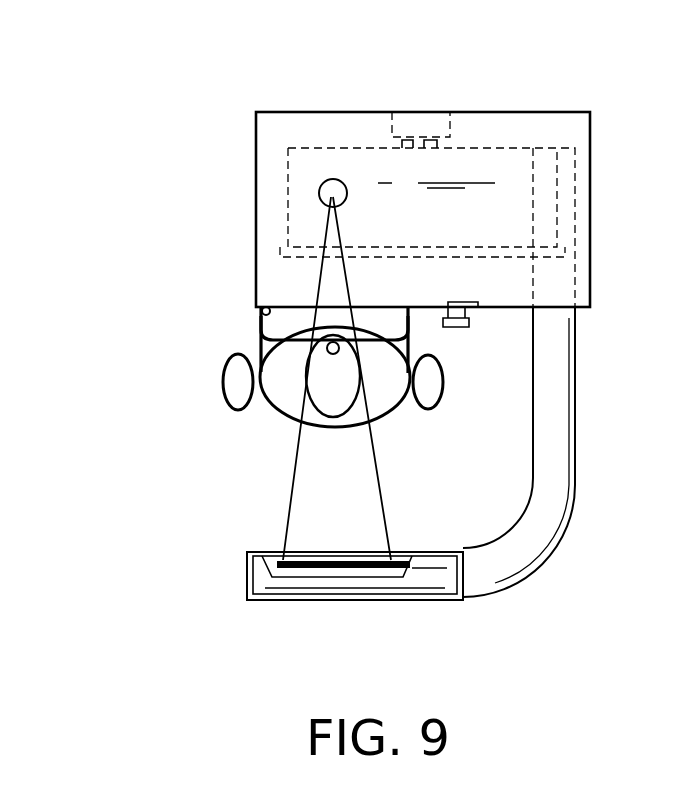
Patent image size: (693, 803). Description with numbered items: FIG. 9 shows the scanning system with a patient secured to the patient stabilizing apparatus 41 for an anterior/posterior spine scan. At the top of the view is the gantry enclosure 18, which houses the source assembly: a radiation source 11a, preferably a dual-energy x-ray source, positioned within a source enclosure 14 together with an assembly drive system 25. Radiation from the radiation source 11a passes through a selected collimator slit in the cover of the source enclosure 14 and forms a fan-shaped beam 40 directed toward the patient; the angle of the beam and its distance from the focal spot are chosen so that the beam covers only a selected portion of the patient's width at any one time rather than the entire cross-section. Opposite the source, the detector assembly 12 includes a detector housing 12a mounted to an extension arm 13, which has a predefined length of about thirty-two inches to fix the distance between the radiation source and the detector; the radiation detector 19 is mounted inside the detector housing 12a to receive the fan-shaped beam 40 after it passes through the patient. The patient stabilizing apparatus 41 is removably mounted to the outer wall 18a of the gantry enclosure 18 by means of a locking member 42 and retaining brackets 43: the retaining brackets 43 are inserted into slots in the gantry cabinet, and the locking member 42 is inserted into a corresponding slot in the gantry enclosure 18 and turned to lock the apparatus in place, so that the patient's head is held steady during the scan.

The radiation source 11a is at (318, 191).
The detector assembly 12 is at (385, 595).
The detector housing 12a is at (440, 586).
The extension arm 13 is at (540, 573).
The source enclosure 14 is at (498, 148).
The gantry enclosure 18 is at (592, 200).
The outer wall 18a is at (515, 308).
The radiation detector 19 is at (293, 580).
The assembly drive system 25 is at (440, 114).
The fan-shaped beam 40 is at (292, 494).
The patient stabilizing apparatus 41 is at (254, 330).
The locking member 42 is at (458, 303).
The retaining brackets 43 is at (262, 305).